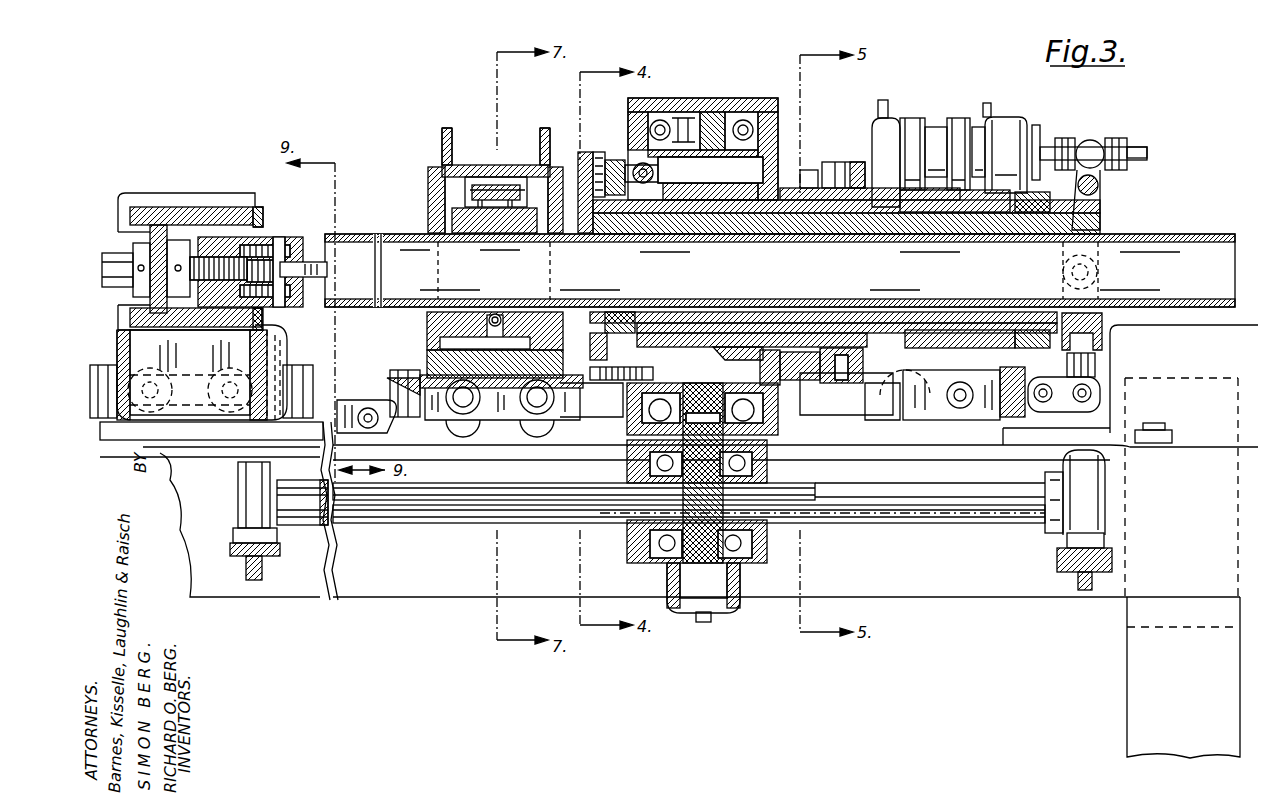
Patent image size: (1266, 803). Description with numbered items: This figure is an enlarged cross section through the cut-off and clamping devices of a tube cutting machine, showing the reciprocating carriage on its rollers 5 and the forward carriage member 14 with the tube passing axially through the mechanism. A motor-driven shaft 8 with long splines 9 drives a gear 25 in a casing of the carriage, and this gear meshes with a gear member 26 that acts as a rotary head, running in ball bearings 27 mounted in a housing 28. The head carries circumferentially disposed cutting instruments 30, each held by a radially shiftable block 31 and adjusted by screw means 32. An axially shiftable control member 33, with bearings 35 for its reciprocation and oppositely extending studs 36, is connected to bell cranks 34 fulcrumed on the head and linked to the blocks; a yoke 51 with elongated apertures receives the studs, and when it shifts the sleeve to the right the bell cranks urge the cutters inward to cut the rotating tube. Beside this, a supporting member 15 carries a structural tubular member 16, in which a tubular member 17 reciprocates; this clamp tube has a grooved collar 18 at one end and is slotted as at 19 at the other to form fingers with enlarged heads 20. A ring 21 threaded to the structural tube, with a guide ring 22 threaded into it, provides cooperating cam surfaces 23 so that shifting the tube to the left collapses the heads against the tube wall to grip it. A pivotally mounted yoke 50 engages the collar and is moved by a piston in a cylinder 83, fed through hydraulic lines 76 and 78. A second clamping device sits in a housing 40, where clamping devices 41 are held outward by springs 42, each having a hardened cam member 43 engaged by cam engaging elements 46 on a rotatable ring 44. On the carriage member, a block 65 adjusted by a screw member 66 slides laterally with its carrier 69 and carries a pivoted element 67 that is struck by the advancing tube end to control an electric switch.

The rollers 5 is at (890, 425).
The shaft 8 is at (955, 510).
The splines 9 is at (538, 500).
The carriage member 14 is at (150, 207).
The supporting member 15 is at (1005, 190).
The structural tubular member 16 is at (848, 188).
The tubular member 17 is at (1028, 315).
The grooved collar 18 is at (1100, 222).
The slotted portion 19 is at (748, 238).
The enlarged heads 20 is at (632, 242).
The ring 21 is at (628, 312).
The guide ring 22 is at (620, 242).
The cooperating cam surfaces 23 is at (640, 312).
The gear 25 is at (668, 582).
The gear member 26 is at (712, 112).
The ball bearings 27 is at (666, 120).
The housing 28 is at (768, 98).
The cutting instruments 30 is at (585, 152).
The radially shiftable block 31 is at (600, 152).
The screw means 32 is at (612, 162).
The control member 33 is at (838, 238).
The bell cranks 34 is at (655, 175).
The bearings 35 is at (748, 190).
The studs 36 is at (840, 162).
The housing 40 is at (433, 170).
The clamping devices 41 is at (455, 215).
The springs 42 is at (432, 320).
The hardened cam member 43 is at (510, 185).
The ring 44 is at (432, 355).
The cam engaging elements 46 is at (500, 180).
The yoke 50 is at (1100, 195).
The yoke 51 is at (808, 170).
The block 65 is at (215, 240).
The screw member 66 is at (110, 257).
The pivoted element 67 is at (312, 262).
The carrier 69 is at (165, 235).
The line 76 is at (890, 106).
The line 78 is at (990, 108).
The cylinder 83 is at (935, 130).